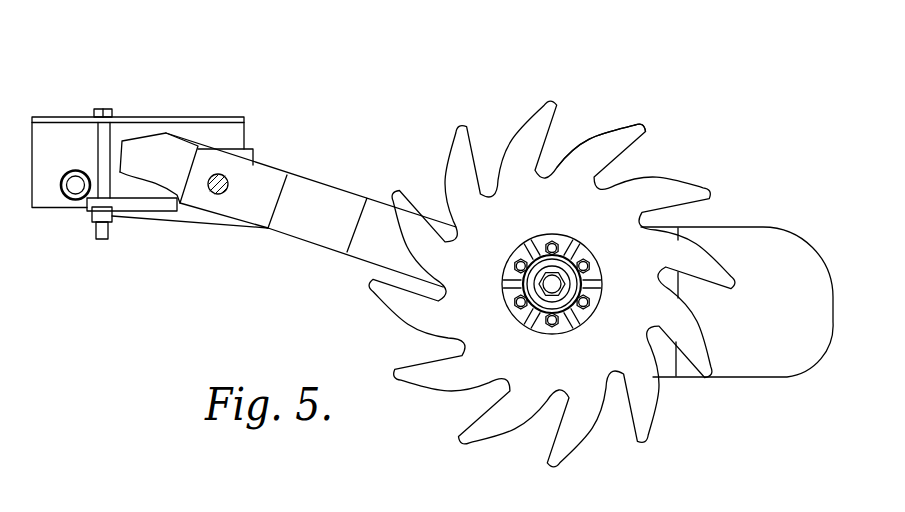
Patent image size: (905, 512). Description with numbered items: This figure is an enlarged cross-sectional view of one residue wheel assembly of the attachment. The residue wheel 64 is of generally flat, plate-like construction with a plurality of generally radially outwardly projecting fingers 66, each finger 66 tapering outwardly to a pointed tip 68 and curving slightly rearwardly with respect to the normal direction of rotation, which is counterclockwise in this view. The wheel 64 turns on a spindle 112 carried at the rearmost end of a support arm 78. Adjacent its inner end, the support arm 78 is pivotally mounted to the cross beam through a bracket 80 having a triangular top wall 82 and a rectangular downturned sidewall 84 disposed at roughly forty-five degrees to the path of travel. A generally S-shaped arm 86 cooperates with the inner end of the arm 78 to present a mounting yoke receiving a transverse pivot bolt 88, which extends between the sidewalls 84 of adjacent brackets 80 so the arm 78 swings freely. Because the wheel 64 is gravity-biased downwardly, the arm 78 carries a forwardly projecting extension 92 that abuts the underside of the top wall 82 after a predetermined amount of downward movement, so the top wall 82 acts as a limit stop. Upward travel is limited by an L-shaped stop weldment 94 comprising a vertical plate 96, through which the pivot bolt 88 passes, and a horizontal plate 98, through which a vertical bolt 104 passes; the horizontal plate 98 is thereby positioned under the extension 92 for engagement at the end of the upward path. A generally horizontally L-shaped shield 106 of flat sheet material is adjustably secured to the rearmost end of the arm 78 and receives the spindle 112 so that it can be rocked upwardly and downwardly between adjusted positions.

The residue wheel 64 is at (670, 150).
The finger 66 is at (614, 132).
The pointed tip 68 is at (646, 118).
The support arm 78 is at (368, 208).
The bracket 80 is at (181, 105).
The top wall 82 is at (233, 120).
The sidewall 84 is at (232, 136).
The S-shaped arm 86 is at (266, 228).
The pivot bolt 88 is at (72, 192).
The extension 92 is at (153, 147).
The stop weldment 94 is at (141, 232).
The vertical plate 96 is at (128, 184).
The horizontal plate 98 is at (121, 201).
The vertical bolt 104 is at (99, 132).
The shield 106 is at (770, 220).
The spindle 112 is at (553, 288).